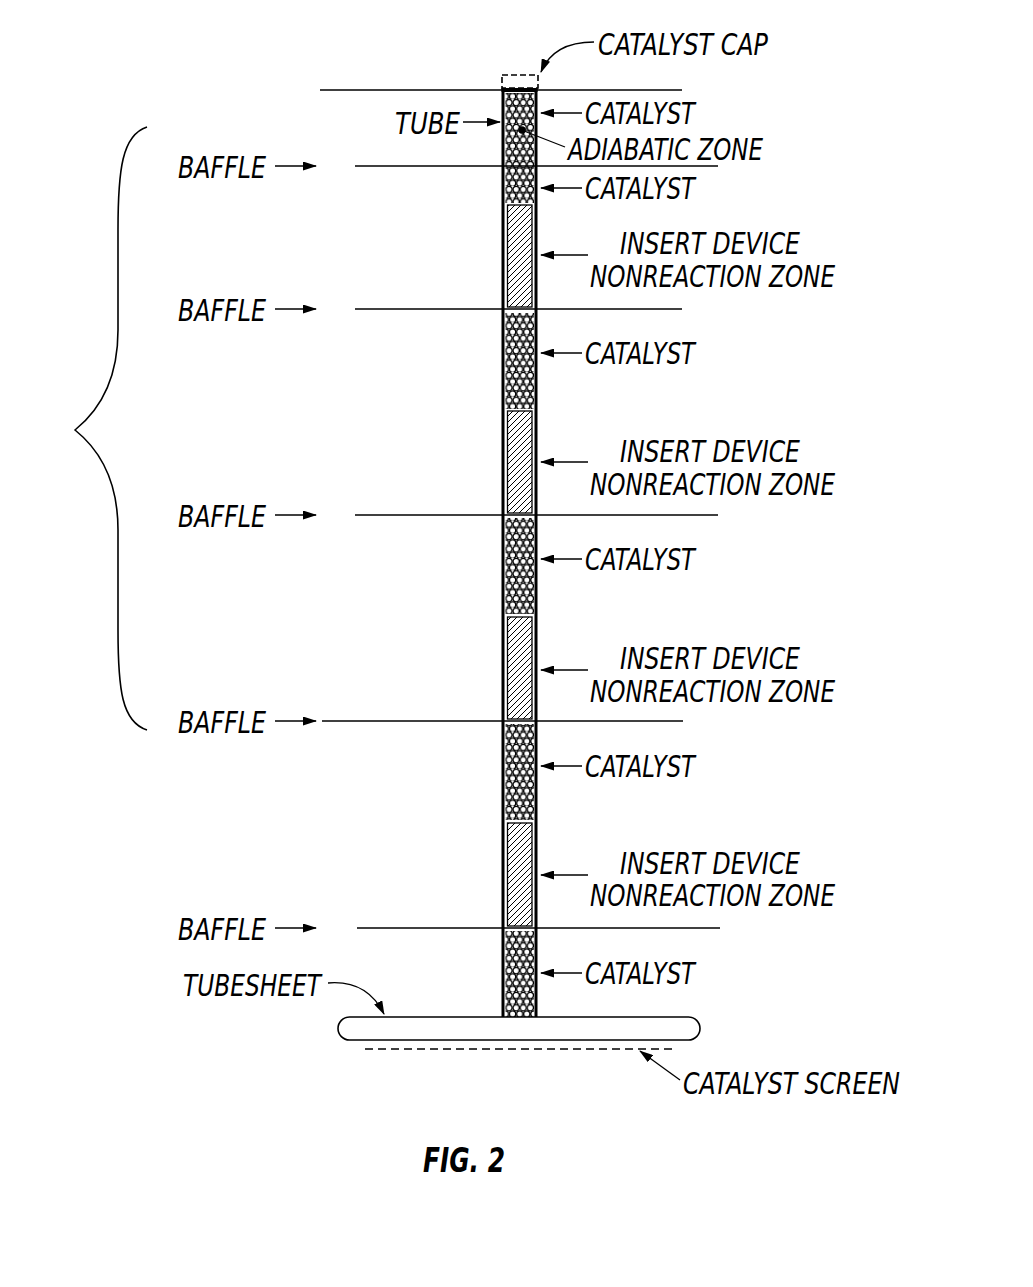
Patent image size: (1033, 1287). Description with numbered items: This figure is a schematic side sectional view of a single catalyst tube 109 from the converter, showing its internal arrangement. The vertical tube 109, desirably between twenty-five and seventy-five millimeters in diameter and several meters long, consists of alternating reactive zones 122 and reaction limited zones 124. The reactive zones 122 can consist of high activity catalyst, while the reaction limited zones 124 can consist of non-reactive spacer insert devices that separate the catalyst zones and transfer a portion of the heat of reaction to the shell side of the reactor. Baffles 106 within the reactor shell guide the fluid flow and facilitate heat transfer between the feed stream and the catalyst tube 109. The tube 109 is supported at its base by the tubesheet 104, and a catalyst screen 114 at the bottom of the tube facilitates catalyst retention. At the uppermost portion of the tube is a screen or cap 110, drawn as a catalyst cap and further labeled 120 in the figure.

The screen or cap 110 is at (520, 70).
The catalyst cap 120 is at (508, 75).
The reactive zones 122 is at (505, 183).
The reaction limited zones 124 is at (505, 258).
The baffles 106 is at (713, 168).
The catalyst tube 109 is at (87, 428).
The tubesheet 104 is at (368, 1041).
The catalyst screen 114 is at (455, 1050).